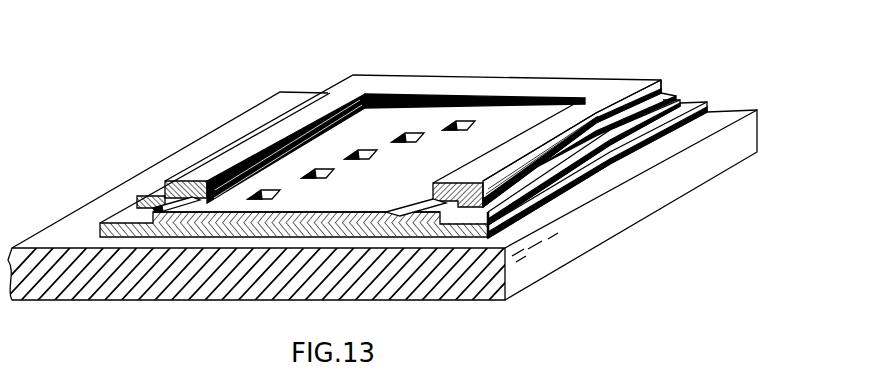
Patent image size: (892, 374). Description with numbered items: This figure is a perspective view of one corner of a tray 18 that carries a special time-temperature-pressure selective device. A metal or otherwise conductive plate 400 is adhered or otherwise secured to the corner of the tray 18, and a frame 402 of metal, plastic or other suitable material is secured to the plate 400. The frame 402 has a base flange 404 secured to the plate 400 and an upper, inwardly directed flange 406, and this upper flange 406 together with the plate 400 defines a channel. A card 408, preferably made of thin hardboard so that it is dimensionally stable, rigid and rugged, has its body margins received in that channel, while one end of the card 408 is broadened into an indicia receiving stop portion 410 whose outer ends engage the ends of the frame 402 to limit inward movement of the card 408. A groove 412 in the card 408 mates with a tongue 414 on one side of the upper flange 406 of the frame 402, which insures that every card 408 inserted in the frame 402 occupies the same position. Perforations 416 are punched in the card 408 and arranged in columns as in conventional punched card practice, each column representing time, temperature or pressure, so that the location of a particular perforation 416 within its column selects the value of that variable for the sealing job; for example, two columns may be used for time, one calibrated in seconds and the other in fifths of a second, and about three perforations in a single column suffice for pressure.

The tray 18 is at (493, 277).
The plate 400 is at (452, 238).
The frame 402 is at (193, 168).
The frame lower layer 404 is at (668, 99).
The upper flange 406 is at (514, 148).
The card 408 is at (360, 201).
The stop portion 410 is at (218, 205).
The groove 412 is at (414, 209).
The tongue 414 is at (433, 187).
The perforations 416 is at (447, 127).